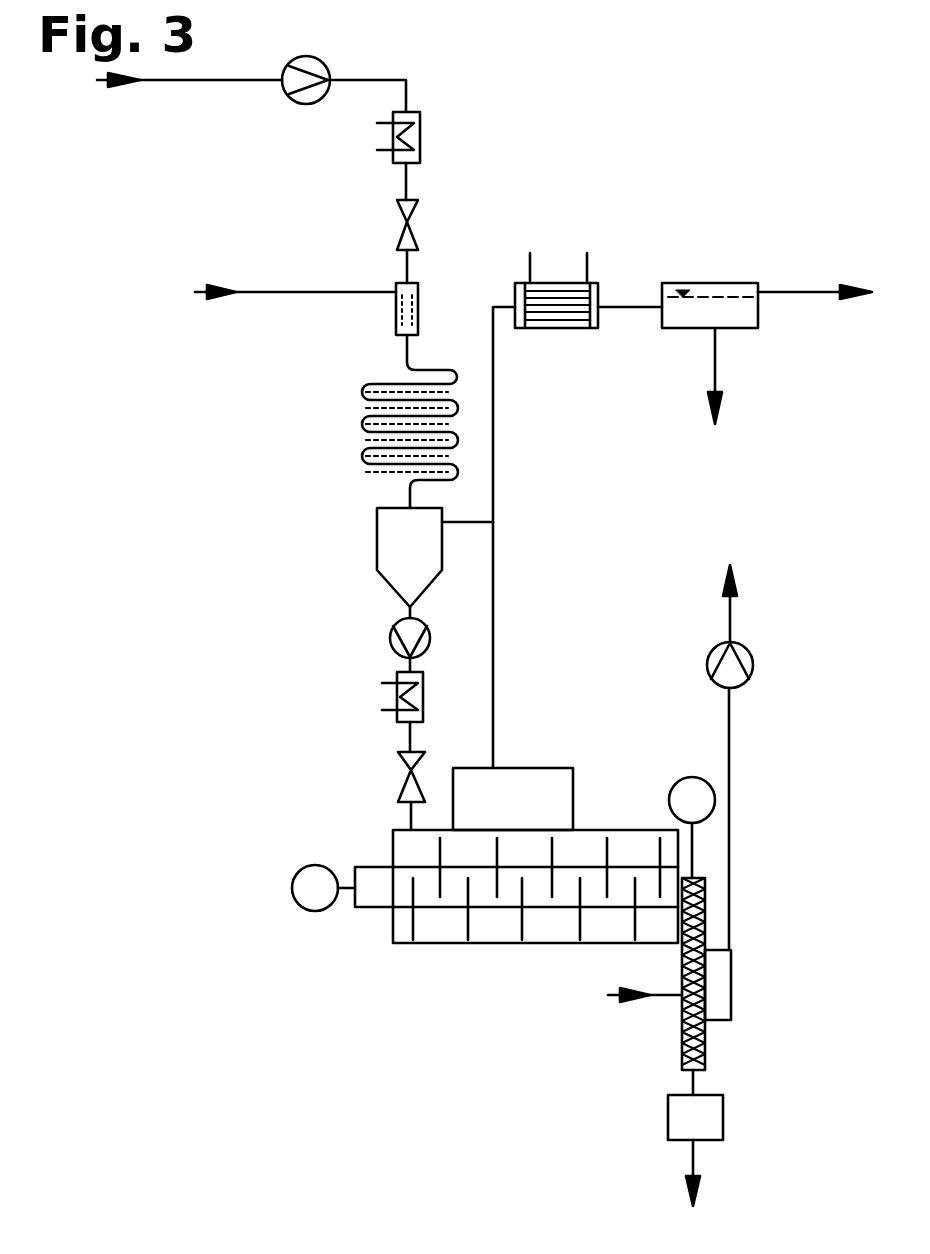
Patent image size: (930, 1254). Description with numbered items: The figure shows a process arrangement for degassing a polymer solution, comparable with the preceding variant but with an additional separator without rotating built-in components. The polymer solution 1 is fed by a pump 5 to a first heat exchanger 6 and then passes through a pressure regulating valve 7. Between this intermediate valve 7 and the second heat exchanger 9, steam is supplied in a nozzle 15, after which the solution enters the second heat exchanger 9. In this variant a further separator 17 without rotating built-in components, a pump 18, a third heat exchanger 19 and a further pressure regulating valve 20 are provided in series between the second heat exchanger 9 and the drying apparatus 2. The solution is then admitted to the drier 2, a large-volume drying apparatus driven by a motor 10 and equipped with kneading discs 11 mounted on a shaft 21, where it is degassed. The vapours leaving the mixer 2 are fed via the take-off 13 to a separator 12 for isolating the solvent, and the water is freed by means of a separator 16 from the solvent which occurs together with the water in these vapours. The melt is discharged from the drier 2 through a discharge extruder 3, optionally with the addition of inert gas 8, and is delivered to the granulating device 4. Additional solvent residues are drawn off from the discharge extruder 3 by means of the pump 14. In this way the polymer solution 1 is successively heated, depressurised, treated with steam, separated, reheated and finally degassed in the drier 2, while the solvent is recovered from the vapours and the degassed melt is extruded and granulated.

The polymer solution 1 is at (200, 82).
The drier 2 is at (452, 943).
The discharge extruder 3 is at (705, 1042).
The granulating device 4 is at (720, 1108).
The pump 5 is at (312, 102).
The first heat exchanger 6 is at (420, 137).
The pressure regulating valve 7 is at (412, 225).
The inert gas 8 is at (657, 998).
The second heat exchanger 9 is at (362, 424).
The mixer motor 10 is at (292, 892).
The kneading discs 11 is at (580, 915).
The separator 12 is at (552, 292).
The take-off 13 is at (525, 768).
The pump 14 is at (738, 645).
The nozzle 15 is at (396, 290).
The separator 16 is at (710, 283).
The further separator 17 is at (377, 548).
The pump 18 is at (392, 638).
The third heat exchanger 19 is at (397, 697).
The further pressure regulating valve 20 is at (400, 790).
The mixer shaft 21 is at (433, 910).